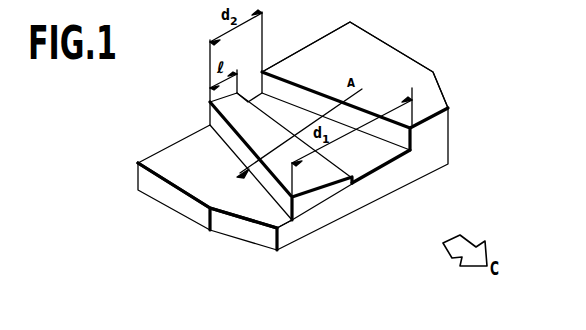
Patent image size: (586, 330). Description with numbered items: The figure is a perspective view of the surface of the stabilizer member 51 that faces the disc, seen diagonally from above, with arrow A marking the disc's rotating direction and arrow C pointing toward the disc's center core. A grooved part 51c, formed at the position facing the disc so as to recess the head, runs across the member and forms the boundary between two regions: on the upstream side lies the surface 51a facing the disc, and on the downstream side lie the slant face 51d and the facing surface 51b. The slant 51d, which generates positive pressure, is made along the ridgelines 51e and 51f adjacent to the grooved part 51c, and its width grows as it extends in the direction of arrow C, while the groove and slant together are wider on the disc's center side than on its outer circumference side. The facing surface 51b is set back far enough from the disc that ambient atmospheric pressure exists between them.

The stabilizer member 51 is at (379, 188).
The surface facing the disc on the upstream side 51a is at (400, 62).
The facing surface on the downstream side 51b is at (178, 150).
The grooved part 51c is at (386, 154).
The slant face 51d is at (318, 173).
The ridgeline 51e is at (273, 121).
The ridgeline 51f is at (242, 141).